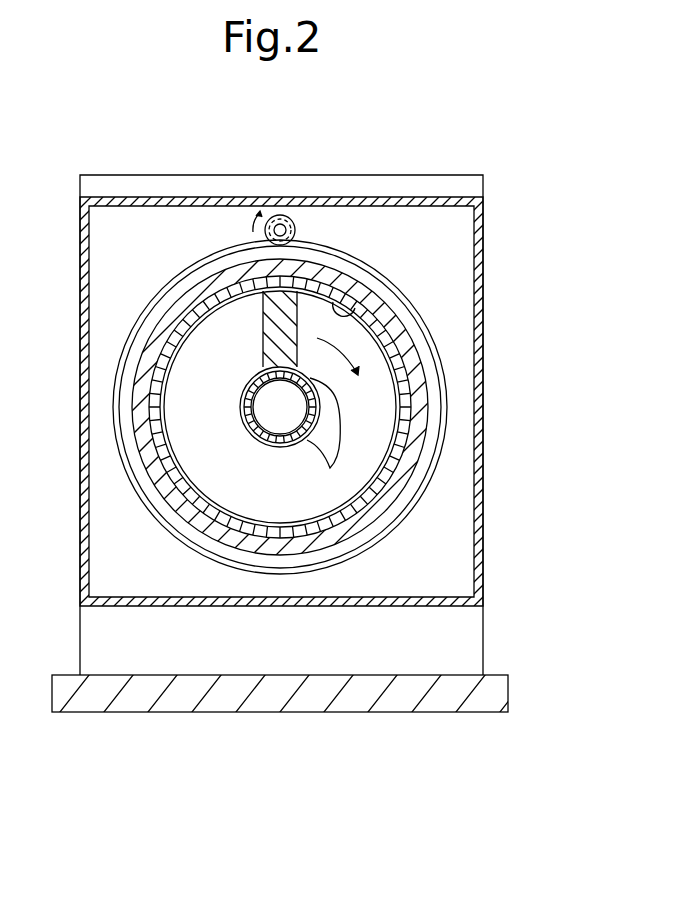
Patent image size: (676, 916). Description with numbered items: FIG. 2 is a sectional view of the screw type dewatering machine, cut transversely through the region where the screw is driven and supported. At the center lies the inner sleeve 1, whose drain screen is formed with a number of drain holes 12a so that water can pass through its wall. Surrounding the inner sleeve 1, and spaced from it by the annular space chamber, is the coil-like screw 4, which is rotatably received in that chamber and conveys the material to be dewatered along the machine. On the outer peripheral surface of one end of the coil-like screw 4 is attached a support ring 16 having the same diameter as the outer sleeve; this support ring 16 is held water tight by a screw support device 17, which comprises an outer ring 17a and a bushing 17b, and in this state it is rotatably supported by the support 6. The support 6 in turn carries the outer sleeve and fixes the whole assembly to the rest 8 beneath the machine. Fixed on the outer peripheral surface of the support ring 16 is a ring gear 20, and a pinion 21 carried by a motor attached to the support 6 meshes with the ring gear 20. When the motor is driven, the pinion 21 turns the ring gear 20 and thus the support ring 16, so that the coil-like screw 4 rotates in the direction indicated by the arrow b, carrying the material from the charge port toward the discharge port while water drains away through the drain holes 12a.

The inner sleeve 1 is at (265, 448).
The coil-like screw 4 is at (273, 318).
The support 6 is at (485, 478).
The rest 8 is at (490, 687).
The drain holes 12a is at (330, 468).
The support ring 16 is at (348, 305).
The screw support device 17 is at (178, 368).
The outer ring 17a is at (200, 287).
The bushing 17b is at (187, 315).
The ring gear 20 is at (357, 267).
The pinion 21 is at (283, 212).
The arrow b is at (412, 342).